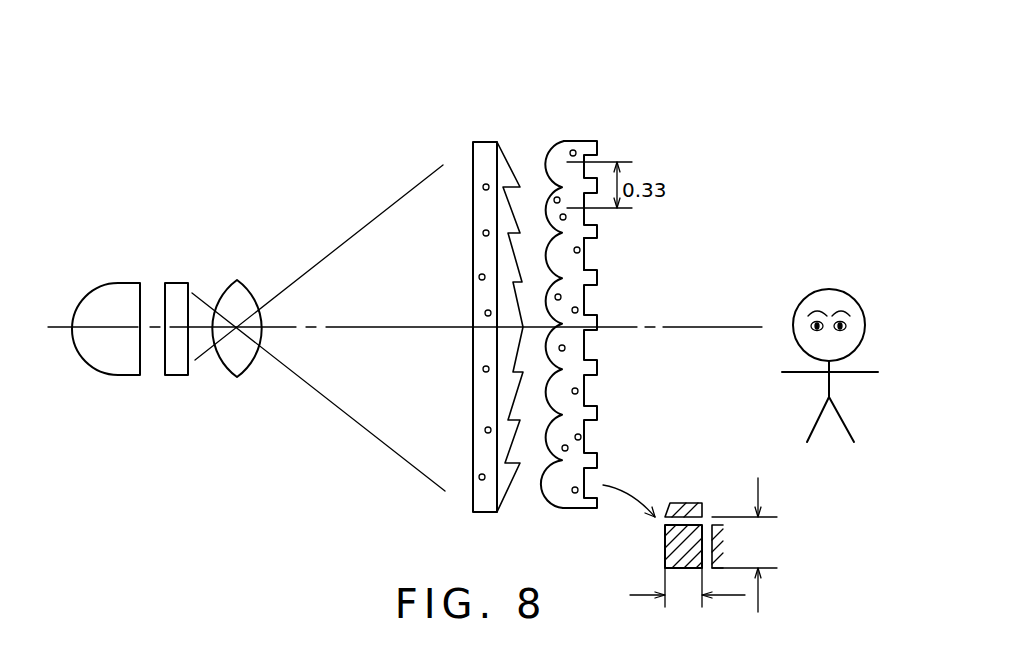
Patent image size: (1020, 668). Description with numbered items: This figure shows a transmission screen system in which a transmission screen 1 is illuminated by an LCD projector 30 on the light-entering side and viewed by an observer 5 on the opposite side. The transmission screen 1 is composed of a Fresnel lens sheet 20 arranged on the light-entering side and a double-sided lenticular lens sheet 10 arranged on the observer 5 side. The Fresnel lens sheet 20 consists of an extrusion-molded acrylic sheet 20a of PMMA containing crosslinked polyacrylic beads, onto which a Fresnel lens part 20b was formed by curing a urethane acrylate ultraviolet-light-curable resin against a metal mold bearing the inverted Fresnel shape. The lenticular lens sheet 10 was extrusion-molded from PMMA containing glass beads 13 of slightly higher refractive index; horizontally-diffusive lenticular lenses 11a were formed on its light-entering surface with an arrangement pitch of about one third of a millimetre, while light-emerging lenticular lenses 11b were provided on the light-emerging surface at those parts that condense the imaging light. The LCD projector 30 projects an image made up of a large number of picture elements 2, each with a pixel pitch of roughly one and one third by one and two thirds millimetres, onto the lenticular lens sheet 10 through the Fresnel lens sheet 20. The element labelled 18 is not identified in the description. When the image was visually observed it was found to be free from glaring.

The transmission screen 1 is at (535, 107).
The picture element 2 is at (683, 532).
The observer 5 is at (866, 320).
The double-sided lenticular lens sheet 10 is at (587, 321).
The horizontally-diffusive lenticular lens 11a is at (545, 247).
The light-emerging lenticular lens 11b is at (582, 251).
The glass bead 13 is at (574, 493).
The hole 18 is at (480, 479).
The Fresnel lens sheet 20 is at (462, 321).
The acrylic sheet 20a is at (480, 160).
The Fresnel lens part 20b is at (513, 480).
The LCD projector 30 is at (250, 255).